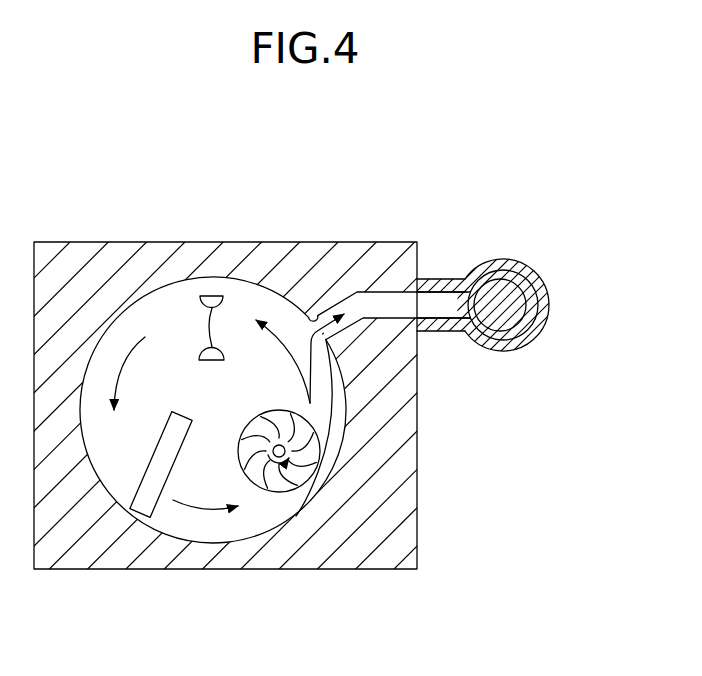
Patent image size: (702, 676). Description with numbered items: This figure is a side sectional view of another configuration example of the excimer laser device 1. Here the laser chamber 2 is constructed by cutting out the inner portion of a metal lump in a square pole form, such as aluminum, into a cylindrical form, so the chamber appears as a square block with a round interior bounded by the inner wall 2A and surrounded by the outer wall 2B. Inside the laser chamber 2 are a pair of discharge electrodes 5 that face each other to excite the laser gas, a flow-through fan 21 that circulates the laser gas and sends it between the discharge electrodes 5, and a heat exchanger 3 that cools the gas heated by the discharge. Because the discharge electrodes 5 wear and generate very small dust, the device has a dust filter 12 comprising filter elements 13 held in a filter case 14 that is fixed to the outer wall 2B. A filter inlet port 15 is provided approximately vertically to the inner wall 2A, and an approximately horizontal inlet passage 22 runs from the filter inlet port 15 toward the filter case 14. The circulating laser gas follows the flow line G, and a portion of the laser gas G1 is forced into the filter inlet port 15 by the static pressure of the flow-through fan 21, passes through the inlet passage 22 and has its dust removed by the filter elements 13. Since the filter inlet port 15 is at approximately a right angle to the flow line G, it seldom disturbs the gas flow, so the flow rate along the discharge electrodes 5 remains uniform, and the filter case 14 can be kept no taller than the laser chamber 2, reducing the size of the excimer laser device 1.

The excimer laser device 1 is at (433, 226).
The laser chamber 2 is at (357, 242).
The inner wall 2A is at (259, 288).
The outer wall 2B is at (418, 487).
The heat exchanger 3 is at (150, 500).
The discharge electrodes 5 is at (205, 297).
The dust filter 12 is at (546, 232).
The filter elements 13 is at (518, 327).
The filter case 14 is at (549, 306).
The filter inlet port 15 is at (312, 312).
The flow-through fan 21 is at (287, 480).
The inlet passage 22 is at (382, 290).
The flow line of the laser gas G is at (127, 368).
The laser gas G1 is at (336, 386).